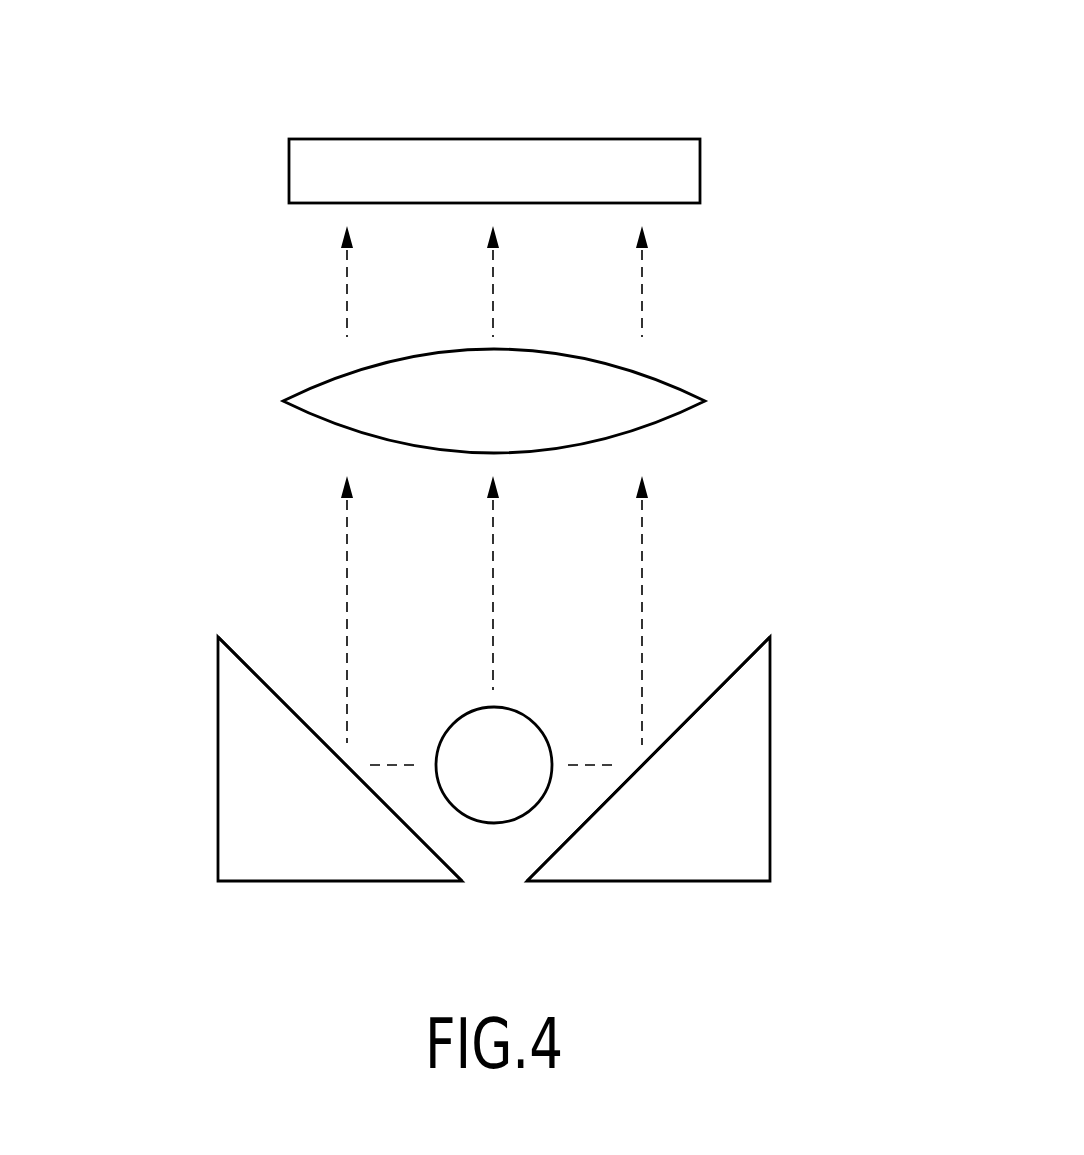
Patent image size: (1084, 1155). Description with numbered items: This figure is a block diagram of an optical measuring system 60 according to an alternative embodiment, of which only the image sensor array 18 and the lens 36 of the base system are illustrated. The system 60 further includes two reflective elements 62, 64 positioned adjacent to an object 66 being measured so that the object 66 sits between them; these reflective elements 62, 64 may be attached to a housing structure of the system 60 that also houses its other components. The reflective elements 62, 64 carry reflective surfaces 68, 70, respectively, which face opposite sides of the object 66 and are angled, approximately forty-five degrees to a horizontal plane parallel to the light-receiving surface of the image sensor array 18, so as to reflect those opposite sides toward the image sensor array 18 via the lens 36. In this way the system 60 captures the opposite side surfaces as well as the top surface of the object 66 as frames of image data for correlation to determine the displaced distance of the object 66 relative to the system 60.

The optical measuring system 60 is at (754, 38).
The image sensor array 18 is at (700, 168).
The lens 36 is at (687, 393).
The reflective element 62 is at (218, 737).
The reflective element 64 is at (770, 735).
The object 66 is at (525, 713).
The reflective surface 68 is at (243, 661).
The reflective surface 70 is at (750, 663).